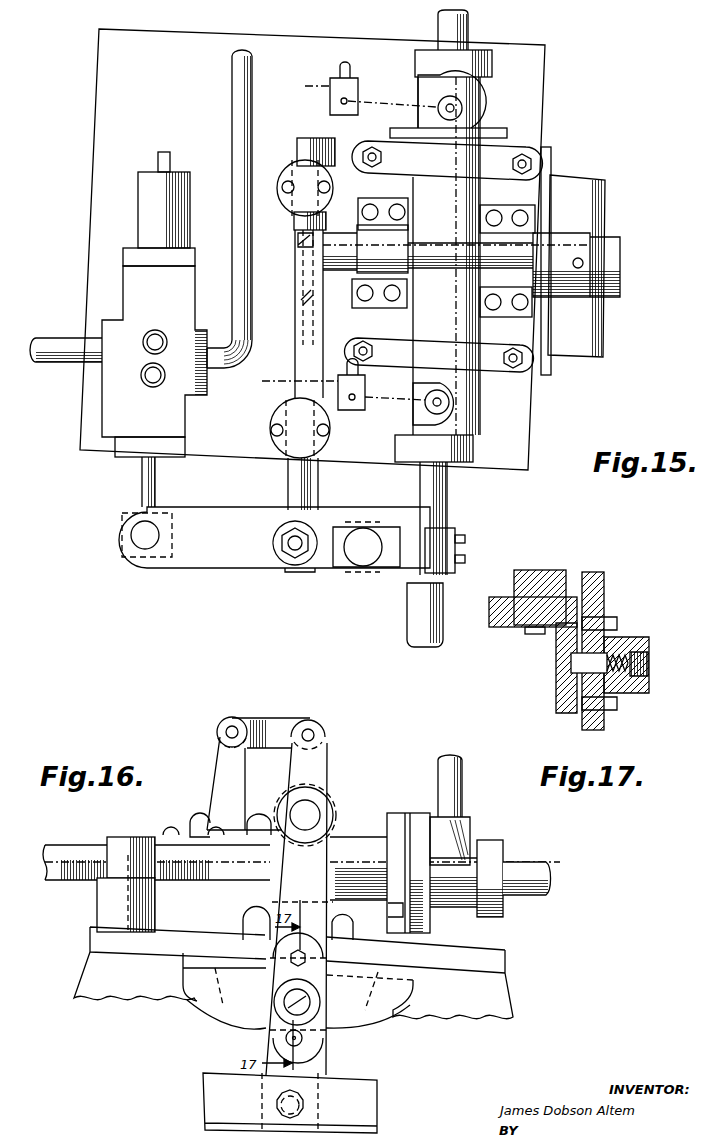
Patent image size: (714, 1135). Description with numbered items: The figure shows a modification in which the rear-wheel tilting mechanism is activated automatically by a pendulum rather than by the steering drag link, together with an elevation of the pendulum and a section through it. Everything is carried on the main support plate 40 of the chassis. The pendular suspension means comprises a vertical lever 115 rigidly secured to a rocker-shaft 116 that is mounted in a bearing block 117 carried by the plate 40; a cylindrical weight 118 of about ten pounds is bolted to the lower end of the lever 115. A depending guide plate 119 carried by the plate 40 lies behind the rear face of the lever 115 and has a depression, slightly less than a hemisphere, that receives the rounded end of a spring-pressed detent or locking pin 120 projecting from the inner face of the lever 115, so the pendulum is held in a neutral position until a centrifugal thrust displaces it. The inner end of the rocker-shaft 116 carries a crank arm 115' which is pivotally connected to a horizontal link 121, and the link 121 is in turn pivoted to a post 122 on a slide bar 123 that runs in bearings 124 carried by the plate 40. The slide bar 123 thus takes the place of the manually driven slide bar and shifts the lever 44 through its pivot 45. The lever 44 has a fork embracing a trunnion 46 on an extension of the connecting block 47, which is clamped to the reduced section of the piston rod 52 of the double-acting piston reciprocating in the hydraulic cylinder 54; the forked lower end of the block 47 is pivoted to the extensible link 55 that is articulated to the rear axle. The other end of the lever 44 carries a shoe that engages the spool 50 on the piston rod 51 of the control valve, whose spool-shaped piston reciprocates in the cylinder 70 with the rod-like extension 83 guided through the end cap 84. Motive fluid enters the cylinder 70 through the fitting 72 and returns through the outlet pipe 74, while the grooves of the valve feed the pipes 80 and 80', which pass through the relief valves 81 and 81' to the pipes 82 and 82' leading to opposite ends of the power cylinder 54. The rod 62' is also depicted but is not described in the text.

In FIG. 15, the main support plate 40 is at (507, 612).
In FIG. 16, the main support plate 40 is at (500, 960).
In FIG. 15, the lever 44 is at (212, 525).
In FIG. 15, the pivot 45 is at (356, 525).
In FIG. 15, the trunnion 46 is at (369, 543).
In FIG. 15, the connecting block 47 is at (442, 540).
In FIG. 15, the spool 50 is at (122, 512).
In FIG. 15, the piston rod 51 is at (143, 481).
In FIG. 15, the piston rod 52 is at (462, 32).
In FIG. 16, the piston rod 52 is at (528, 870).
In FIG. 15, the hydraulic cylinder 54 is at (462, 320).
In FIG. 16, the hydraulic cylinder 54 is at (347, 845).
In FIG. 15, the extensible link 55 is at (410, 612).
In FIG. 15, the rod 62' is at (225, 195).
In FIG. 15, the cylinder 70 is at (128, 278).
In FIG. 15, the fitting 72 is at (226, 370).
In FIG. 15, the outlet pipe 74 is at (52, 338).
In FIG. 15, the pipe 80 is at (236, 207).
In FIG. 15, the pipe 80' is at (241, 389).
In FIG. 15, the relief valve 81 is at (359, 87).
In FIG. 15, the relief valve 81' is at (366, 384).
In FIG. 15, the pipe 82 is at (405, 102).
In FIG. 16, the pipe 82 is at (465, 810).
In FIG. 15, the pipe 82' is at (409, 407).
In FIG. 15, the rod-like extension 83 is at (162, 152).
In FIG. 15, the end cap 84 is at (142, 188).
In FIG. 15, the vertical lever 115 is at (491, 462).
In FIG. 16, the vertical lever 115 is at (260, 872).
In FIG. 15, the crank arm 115' is at (370, 226).
In FIG. 16, the crank arm 115' is at (318, 897).
In FIG. 15, the rocker-shaft 116 is at (424, 247).
In FIG. 16, the rocker-shaft 116 is at (310, 810).
In FIG. 15, the bearing block 117 is at (505, 233).
In FIG. 15, the cylindrical weight 118 is at (585, 180).
In FIG. 16, the cylindrical weight 118 is at (358, 1106).
In FIG. 15, the guide plate 119 is at (548, 158).
In FIG. 16, the guide plate 119 is at (355, 1015).
In FIG. 15, the locking pin 120 is at (575, 657).
In FIG. 15, the horizontal link 121 is at (305, 277).
In FIG. 16, the horizontal link 121 is at (264, 720).
In FIG. 15, the post 122 is at (302, 322).
In FIG. 16, the post 122 is at (223, 780).
In FIG. 15, the slide bar 123 is at (294, 222).
In FIG. 16, the slide bar 123 is at (180, 867).
In FIG. 15, the bearings 124 is at (298, 168).
In FIG. 16, the bearings 124 is at (107, 899).